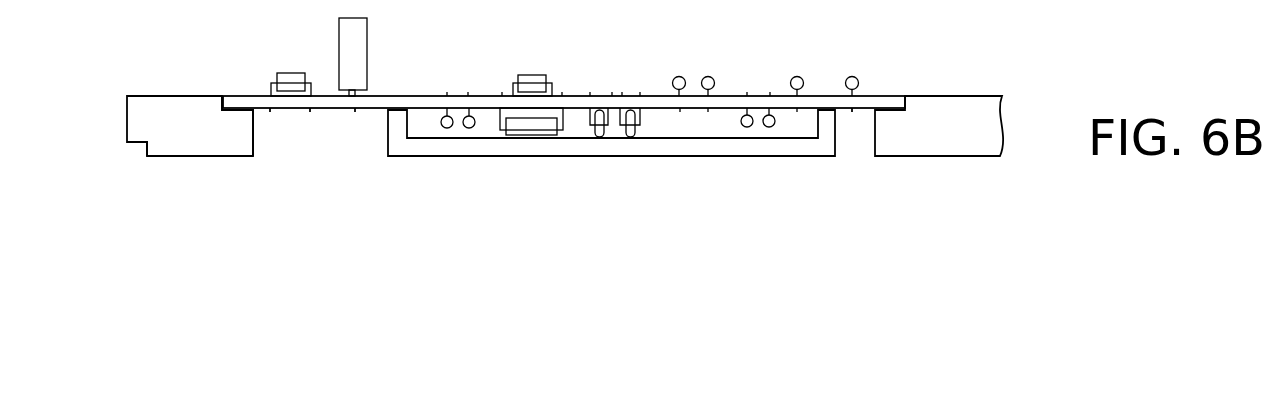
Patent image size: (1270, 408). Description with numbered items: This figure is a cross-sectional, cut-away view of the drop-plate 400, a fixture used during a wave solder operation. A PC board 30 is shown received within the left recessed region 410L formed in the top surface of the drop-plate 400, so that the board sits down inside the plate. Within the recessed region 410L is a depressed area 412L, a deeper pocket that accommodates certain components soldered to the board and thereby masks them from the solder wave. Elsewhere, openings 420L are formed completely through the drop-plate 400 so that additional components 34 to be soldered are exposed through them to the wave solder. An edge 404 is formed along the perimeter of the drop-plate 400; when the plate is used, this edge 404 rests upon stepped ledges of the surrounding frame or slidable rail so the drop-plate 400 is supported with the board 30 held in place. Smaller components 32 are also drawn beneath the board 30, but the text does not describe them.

The PC board 30 is at (888, 94).
The bottom-side electronic components 32 is at (520, 125).
The components 34 is at (368, 52).
The drop-plate 400 is at (168, 95).
The edge 404 is at (127, 157).
The left recessed region 410L is at (238, 113).
The depressed area 412L is at (695, 128).
The opening 420L is at (325, 125).